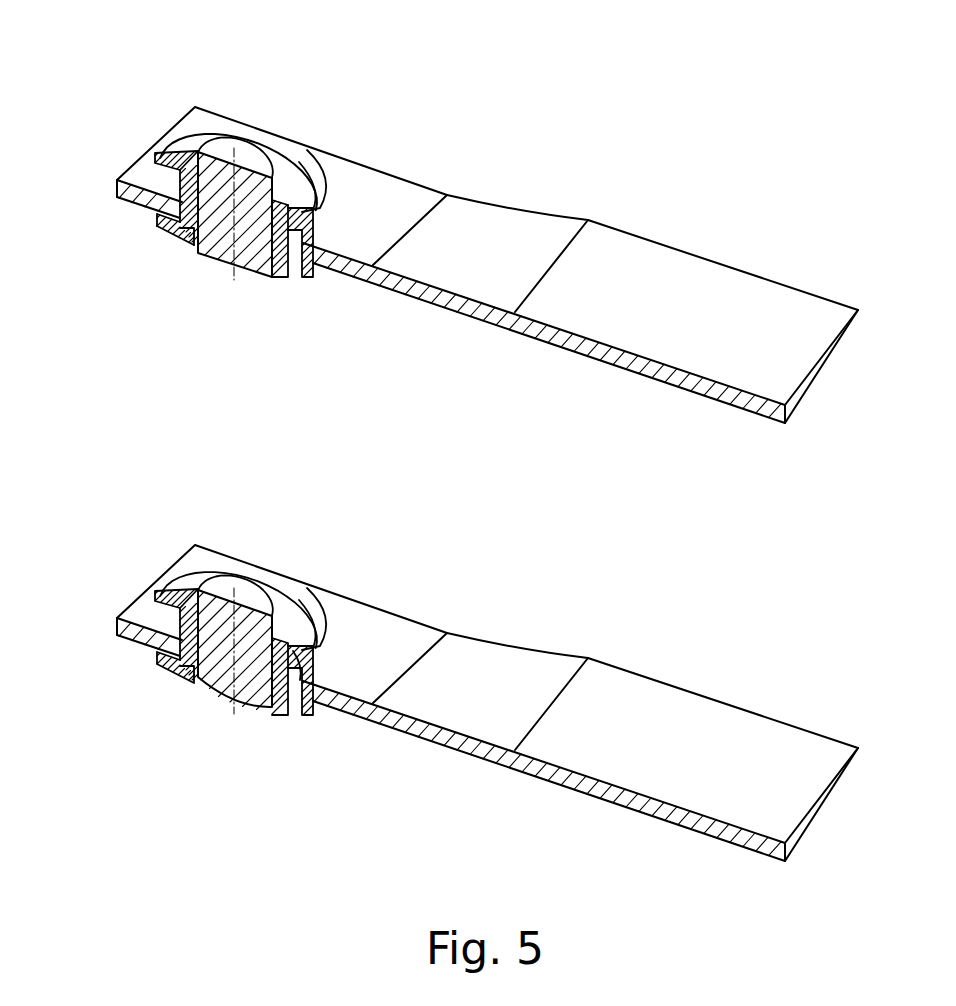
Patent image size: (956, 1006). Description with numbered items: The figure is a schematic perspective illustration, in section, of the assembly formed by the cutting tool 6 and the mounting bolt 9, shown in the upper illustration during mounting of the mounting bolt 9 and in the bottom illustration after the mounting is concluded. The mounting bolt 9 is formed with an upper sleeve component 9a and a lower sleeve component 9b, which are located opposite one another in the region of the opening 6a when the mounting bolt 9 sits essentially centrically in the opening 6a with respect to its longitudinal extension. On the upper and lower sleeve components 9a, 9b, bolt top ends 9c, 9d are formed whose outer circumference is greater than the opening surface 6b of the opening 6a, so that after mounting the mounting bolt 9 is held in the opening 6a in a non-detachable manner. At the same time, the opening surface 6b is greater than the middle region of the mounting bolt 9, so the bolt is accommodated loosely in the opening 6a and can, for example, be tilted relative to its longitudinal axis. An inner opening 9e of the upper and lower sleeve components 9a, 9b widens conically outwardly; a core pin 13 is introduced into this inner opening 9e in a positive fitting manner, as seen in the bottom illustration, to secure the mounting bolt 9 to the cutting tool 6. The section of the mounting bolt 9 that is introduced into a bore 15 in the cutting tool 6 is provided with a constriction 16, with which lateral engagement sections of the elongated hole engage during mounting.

The cutting tool 6 is at (802, 328).
The opening 6a is at (312, 236).
The opening surface 6b is at (312, 240).
The mounting bolt 9 is at (258, 127).
The upper sleeve component 9a is at (193, 132).
The lower sleeve component 9b is at (158, 226).
The bolt top end 9c is at (308, 162).
The bolt top end 9d is at (303, 277).
The inner opening 9e is at (193, 247).
The core pin 13 is at (240, 272).
The bore 15 is at (313, 667).
The constriction 16 is at (117, 620).